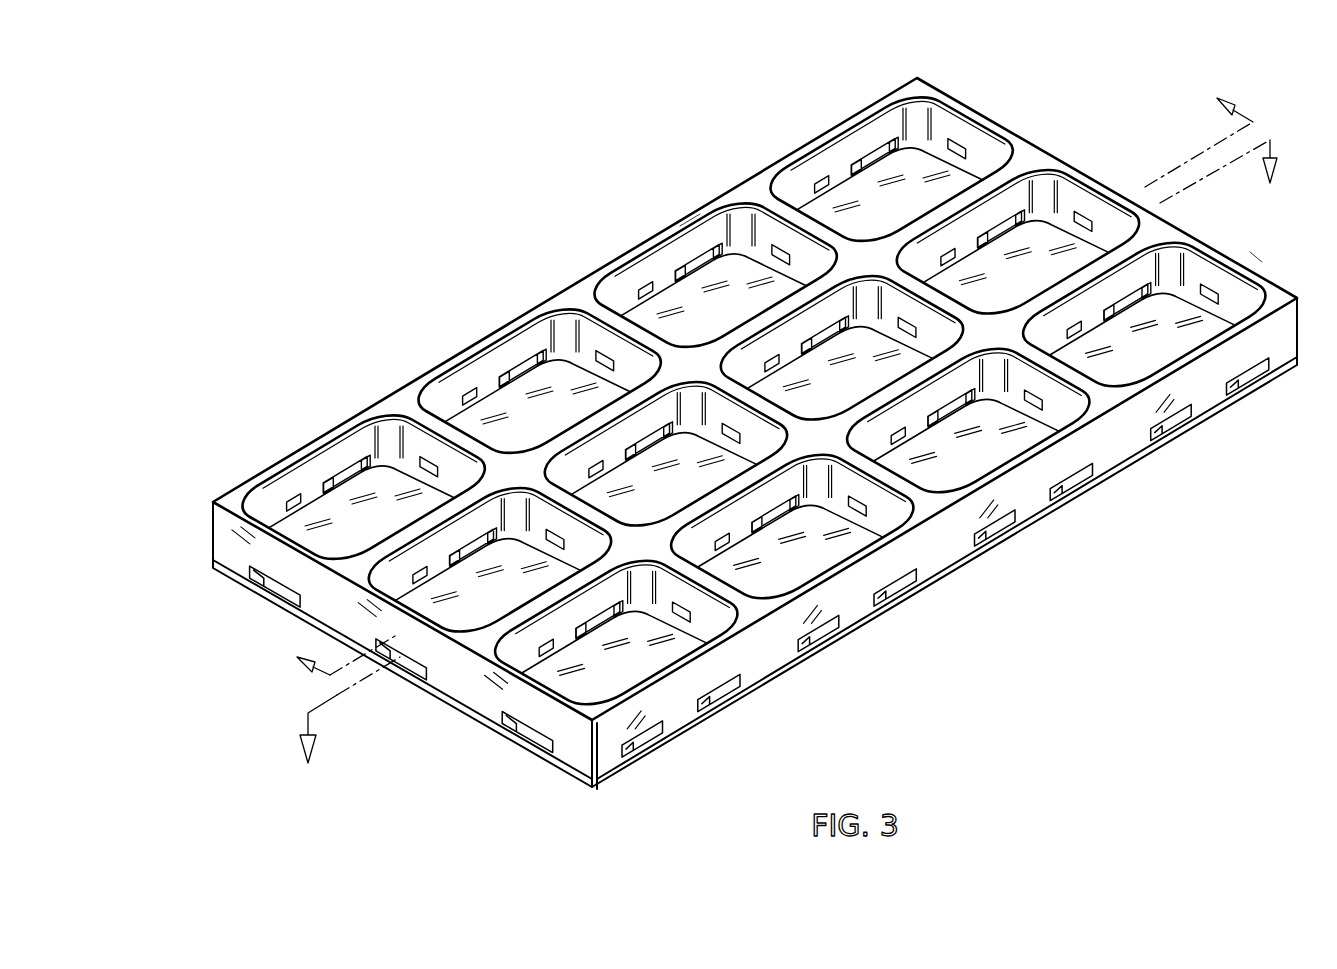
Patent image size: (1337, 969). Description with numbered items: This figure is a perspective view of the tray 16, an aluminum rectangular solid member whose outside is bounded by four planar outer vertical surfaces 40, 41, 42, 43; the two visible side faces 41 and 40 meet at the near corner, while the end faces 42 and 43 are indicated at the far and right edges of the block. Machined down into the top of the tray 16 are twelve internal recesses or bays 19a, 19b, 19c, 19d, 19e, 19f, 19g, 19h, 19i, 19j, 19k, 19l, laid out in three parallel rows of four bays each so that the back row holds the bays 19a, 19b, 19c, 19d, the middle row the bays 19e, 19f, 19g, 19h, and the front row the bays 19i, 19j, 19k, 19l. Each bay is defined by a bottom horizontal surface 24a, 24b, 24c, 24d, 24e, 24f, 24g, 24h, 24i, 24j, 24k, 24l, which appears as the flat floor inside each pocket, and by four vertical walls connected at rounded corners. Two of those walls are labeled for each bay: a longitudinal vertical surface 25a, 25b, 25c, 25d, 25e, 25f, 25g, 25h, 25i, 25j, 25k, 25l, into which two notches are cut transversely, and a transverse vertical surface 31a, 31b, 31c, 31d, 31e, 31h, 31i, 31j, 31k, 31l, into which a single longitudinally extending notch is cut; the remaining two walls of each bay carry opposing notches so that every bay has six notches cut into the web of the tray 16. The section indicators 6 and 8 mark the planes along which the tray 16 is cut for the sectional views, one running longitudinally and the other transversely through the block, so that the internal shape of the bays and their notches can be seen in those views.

The tray 16 is at (403, 223).
The bay 19a is at (306, 466).
The bay 19b is at (493, 358).
The bay 19c is at (640, 282).
The bay 19d is at (840, 142).
The bay 19e is at (463, 597).
The bay 19f is at (700, 482).
The bay 19g is at (900, 367).
The bay 19h is at (1103, 198).
The bay 19i is at (597, 668).
The bay 19j is at (897, 490).
The bay 19k is at (1080, 387).
The bay 19l is at (1240, 282).
The bottom horizontal surface 24a is at (338, 455).
The bottom horizontal surface 24b is at (514, 353).
The bottom horizontal surface 24c is at (689, 254).
The bottom horizontal surface 24d is at (861, 149).
The bottom horizontal surface 24e is at (452, 541).
The bottom horizontal surface 24f is at (701, 450).
The bottom horizontal surface 24g is at (919, 360).
The bottom horizontal surface 24h is at (1044, 205).
The bottom horizontal surface 24i is at (638, 690).
The bottom horizontal surface 24j is at (839, 591).
The bottom horizontal surface 24k is at (1019, 483).
The bottom horizontal surface 24l is at (1178, 324).
The longitudinal vertical surface 25a is at (290, 482).
The longitudinal vertical surface 25b is at (448, 387).
The longitudinal vertical surface 25c is at (672, 265).
The longitudinal vertical surface 25d is at (808, 168).
The longitudinal vertical surface 25e is at (492, 488).
The longitudinal vertical surface 25f is at (648, 410).
The longitudinal vertical surface 25g is at (845, 285).
The longitudinal vertical surface 25h is at (1020, 196).
The longitudinal vertical surface 25i is at (690, 615).
The longitudinal vertical surface 25j is at (760, 535).
The longitudinal vertical surface 25k is at (973, 465).
The longitudinal vertical surface 25l is at (1215, 300).
The transverse vertical surface 31a is at (423, 443).
The transverse vertical surface 31b is at (575, 335).
The transverse vertical surface 31c is at (735, 235).
The transverse vertical surface 31d is at (966, 138).
The transverse vertical surface 31e is at (543, 543).
The transverse vertical surface 31h is at (1075, 183).
The transverse vertical surface 31i is at (700, 600).
The transverse vertical surface 31j is at (870, 490).
The transverse vertical surface 31k is at (1060, 405).
The transverse vertical surface 31l is at (1208, 277).
The outer vertical surface 40 is at (665, 705).
The outer vertical surface 41 is at (467, 672).
The outer vertical surface 42 is at (706, 178).
The outer vertical surface 43 is at (1260, 242).
The section line 6- 6 is at (766, 388).
The section line 8- 8 is at (786, 460).